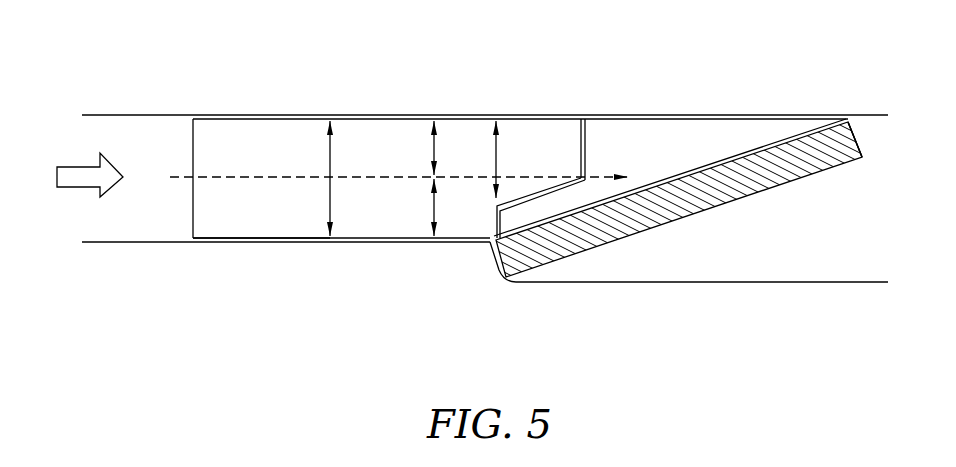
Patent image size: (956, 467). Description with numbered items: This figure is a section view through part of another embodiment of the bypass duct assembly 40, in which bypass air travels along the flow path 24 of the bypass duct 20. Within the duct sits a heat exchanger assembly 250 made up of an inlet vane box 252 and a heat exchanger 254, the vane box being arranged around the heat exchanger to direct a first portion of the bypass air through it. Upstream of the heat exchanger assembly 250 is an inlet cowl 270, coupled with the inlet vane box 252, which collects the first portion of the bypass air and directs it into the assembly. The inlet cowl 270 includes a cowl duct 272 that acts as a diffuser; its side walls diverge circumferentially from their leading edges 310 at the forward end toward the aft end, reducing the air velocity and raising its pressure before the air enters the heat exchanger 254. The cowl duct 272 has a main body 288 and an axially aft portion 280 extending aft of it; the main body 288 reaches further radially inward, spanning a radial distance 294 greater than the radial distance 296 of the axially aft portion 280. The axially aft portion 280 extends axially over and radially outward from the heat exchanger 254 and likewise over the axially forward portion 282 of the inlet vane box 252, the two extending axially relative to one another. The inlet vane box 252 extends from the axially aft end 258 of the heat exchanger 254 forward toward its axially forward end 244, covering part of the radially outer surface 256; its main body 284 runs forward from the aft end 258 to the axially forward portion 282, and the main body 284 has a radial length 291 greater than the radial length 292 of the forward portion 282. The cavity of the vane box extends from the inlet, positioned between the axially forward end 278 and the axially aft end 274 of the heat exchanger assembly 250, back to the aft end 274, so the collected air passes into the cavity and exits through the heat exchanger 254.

The bypass duct 20 is at (132, 216).
The flow path 24 is at (82, 165).
The bypass duct assembly 40 is at (273, 113).
The axially forward end of the heat exchanger 244 is at (492, 258).
The heat exchanger assembly 250 is at (668, 67).
The inlet vane box 252 is at (606, 125).
The heat exchanger 254 is at (773, 177).
The radially outer surface of the heat exchanger 256 is at (787, 137).
The axially aft end of the heat exchanger 258 is at (855, 128).
The inlet cowl 270 is at (386, 127).
The cowl duct 272 is at (292, 162).
The axially aft end of the heat exchanger assembly 274 is at (858, 152).
The axially forward end of the heat exchanger assembly 278 is at (192, 118).
The axially aft portion of the cowl duct 280 is at (700, 150).
The axially forward portion of the inlet vane box 282 is at (513, 222).
The main body of the inlet vane box 284 is at (643, 150).
The main body of the cowl duct 288 is at (293, 216).
The radial length of the main body of the inlet vane box 291 is at (437, 147).
The radial length of the axially forward portion of the inlet vane box 292 is at (432, 208).
The radial distance of the main body of the cowl duct 294 is at (330, 180).
The radial distance of the axially aft portion of the cowl duct 296 is at (498, 168).
The leading edges 310 is at (192, 228).